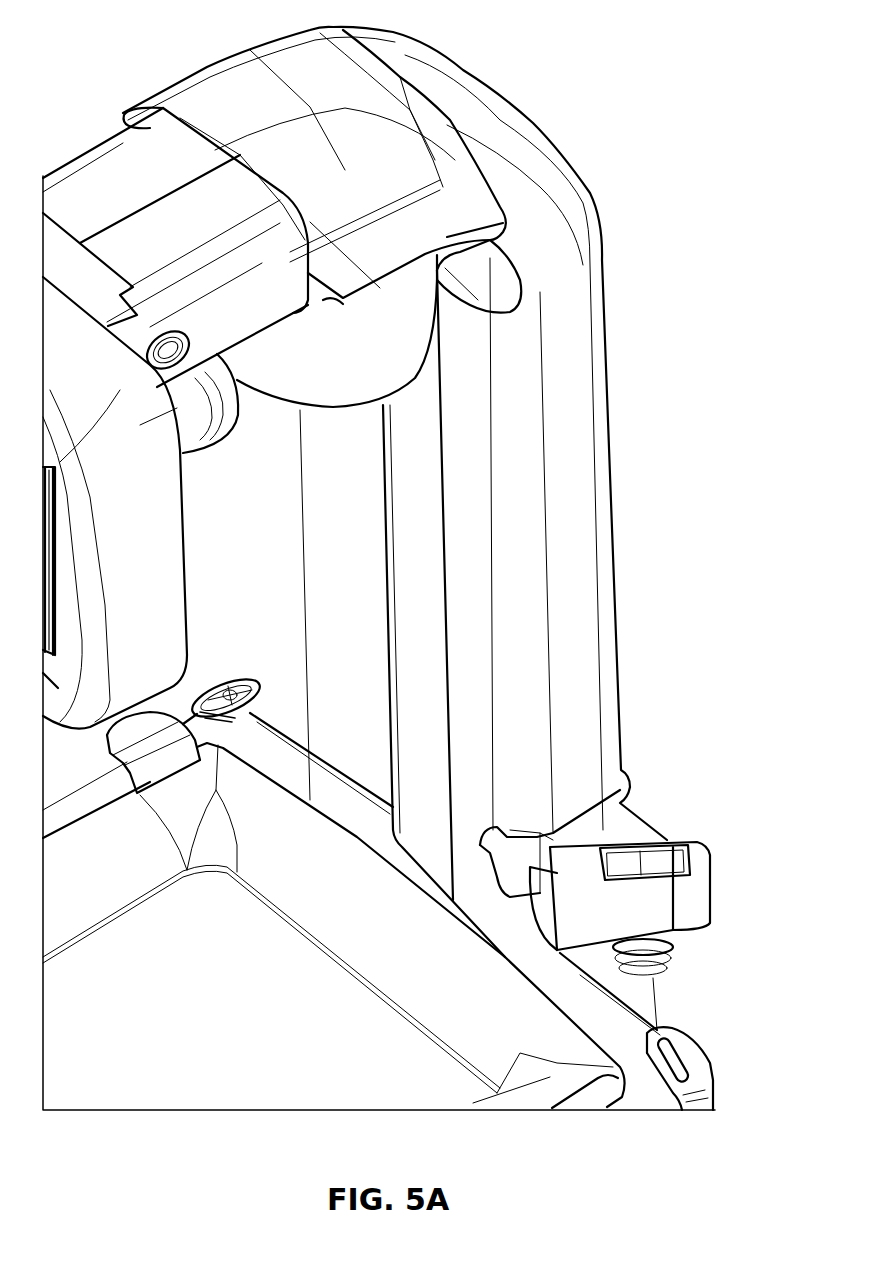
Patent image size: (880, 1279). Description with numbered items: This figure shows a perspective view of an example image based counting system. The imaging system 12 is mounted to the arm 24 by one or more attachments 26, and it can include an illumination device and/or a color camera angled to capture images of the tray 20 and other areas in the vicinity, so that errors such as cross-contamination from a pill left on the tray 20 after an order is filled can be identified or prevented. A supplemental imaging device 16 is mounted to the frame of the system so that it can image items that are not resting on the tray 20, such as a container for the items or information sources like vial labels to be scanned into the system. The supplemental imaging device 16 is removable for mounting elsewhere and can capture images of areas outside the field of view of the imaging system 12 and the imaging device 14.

The imaging system 12 is at (274, 532).
The imaging device 14 is at (213, 443).
The supplemental imaging device 16 is at (660, 837).
The tray 20 is at (378, 891).
The arm 24 is at (608, 408).
The attachments 26 is at (172, 86).